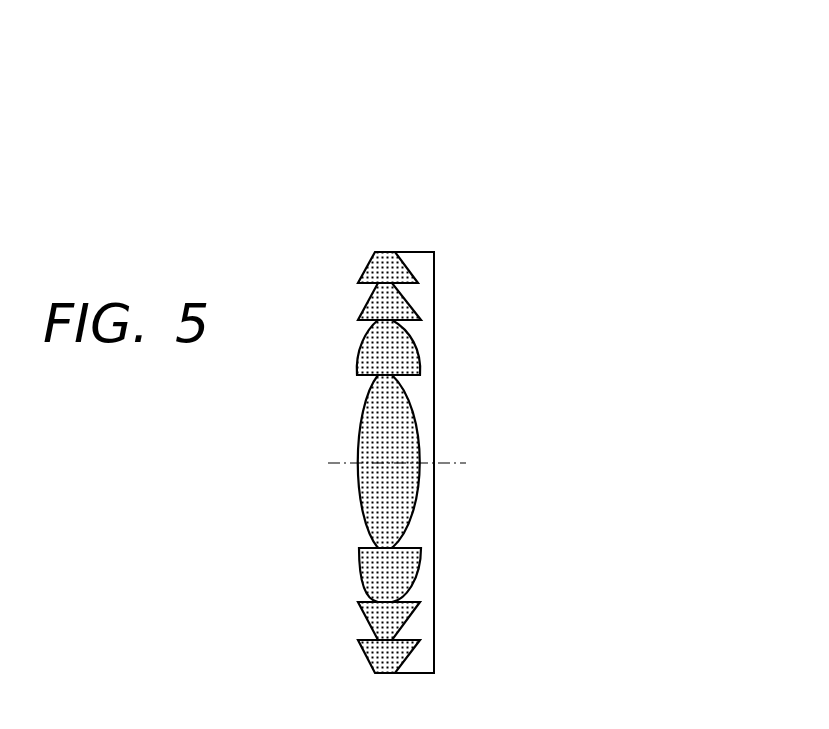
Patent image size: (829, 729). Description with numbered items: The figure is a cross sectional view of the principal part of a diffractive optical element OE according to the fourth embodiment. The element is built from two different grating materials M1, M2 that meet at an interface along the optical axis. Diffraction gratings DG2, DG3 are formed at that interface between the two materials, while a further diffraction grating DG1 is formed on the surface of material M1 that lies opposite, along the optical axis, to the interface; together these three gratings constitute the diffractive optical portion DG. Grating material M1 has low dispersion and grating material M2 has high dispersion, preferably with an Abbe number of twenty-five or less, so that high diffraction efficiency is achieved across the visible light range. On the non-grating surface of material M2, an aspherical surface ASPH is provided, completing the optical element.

The diffractive optical element OE is at (452, 103).
The diffractive optical portion DG is at (483, 146).
The diffraction grating DG1 is at (365, 257).
The diffraction grating DG2 is at (388, 253).
The diffraction grating DG3 is at (423, 262).
The aspherical surface ASPH is at (436, 322).
The grating material M1 is at (377, 573).
The grating material M2 is at (427, 550).